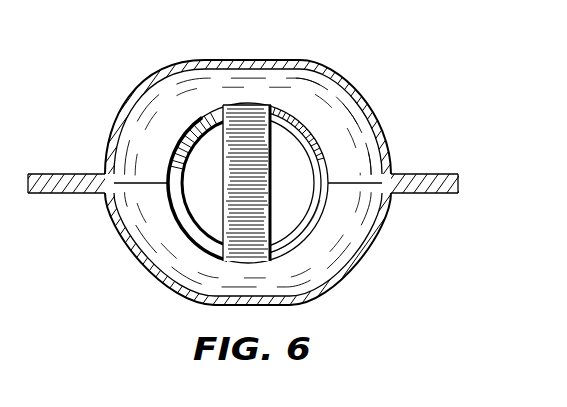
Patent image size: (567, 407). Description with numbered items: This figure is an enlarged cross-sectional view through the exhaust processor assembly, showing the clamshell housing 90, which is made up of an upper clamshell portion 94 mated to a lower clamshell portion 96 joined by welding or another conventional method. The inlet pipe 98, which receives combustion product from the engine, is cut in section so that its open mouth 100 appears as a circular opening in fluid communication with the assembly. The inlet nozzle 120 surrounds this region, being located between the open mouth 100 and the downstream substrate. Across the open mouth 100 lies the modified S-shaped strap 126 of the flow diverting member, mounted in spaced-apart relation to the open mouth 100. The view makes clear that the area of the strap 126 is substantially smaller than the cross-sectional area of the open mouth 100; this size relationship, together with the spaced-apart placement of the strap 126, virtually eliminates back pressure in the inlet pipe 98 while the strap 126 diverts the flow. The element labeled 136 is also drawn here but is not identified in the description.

The tube assembly 90 is at (45, 167).
The upper housing wall 94 is at (115, 126).
The lower housing wall 96 is at (120, 233).
The ring 98 is at (324, 167).
The ring inner lip 100 is at (314, 210).
The housing 120 is at (233, 50).
The stem 126 is at (250, 120).
The inner wall surface 136 is at (339, 123).